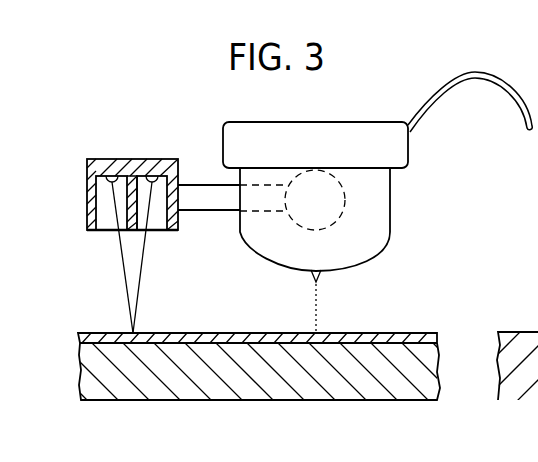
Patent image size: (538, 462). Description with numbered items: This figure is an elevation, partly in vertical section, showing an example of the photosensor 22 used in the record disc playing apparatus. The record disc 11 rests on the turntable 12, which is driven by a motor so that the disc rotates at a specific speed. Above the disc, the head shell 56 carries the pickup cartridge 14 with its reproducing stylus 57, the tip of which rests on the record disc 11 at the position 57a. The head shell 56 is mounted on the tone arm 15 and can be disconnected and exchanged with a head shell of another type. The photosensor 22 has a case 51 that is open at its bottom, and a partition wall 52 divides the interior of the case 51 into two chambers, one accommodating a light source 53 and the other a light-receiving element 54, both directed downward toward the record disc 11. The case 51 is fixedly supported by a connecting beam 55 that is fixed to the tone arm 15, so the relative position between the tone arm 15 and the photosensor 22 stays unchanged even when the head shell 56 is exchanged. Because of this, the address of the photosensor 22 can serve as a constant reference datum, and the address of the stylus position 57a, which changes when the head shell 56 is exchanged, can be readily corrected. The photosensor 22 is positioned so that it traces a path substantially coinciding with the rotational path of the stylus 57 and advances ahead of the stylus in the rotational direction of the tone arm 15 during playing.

The record disc 11 is at (384, 333).
The turntable 12 is at (370, 396).
The pickup cartridge 14 is at (388, 222).
The tone arm 15 is at (345, 192).
The photosensor 22 is at (83, 157).
The case 51 is at (178, 161).
The partition wall 52 is at (128, 216).
The light source 53 is at (111, 176).
The light-receiving element 54 is at (152, 176).
The connecting beam 55 is at (206, 207).
The head shell 56 is at (305, 122).
The reproducing stylus 57 is at (320, 275).
The position of the reproducing stylus 57a is at (315, 331).